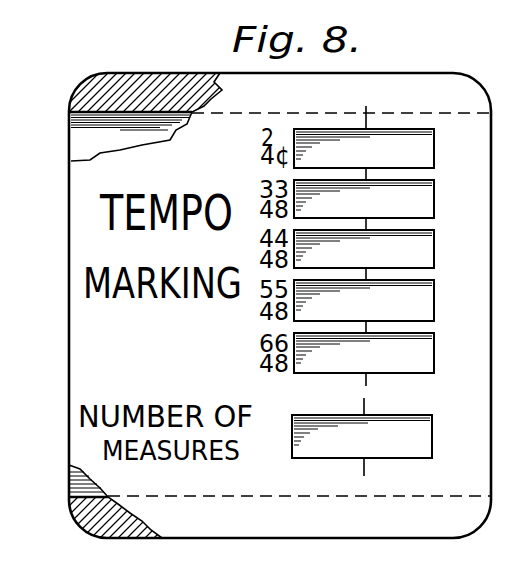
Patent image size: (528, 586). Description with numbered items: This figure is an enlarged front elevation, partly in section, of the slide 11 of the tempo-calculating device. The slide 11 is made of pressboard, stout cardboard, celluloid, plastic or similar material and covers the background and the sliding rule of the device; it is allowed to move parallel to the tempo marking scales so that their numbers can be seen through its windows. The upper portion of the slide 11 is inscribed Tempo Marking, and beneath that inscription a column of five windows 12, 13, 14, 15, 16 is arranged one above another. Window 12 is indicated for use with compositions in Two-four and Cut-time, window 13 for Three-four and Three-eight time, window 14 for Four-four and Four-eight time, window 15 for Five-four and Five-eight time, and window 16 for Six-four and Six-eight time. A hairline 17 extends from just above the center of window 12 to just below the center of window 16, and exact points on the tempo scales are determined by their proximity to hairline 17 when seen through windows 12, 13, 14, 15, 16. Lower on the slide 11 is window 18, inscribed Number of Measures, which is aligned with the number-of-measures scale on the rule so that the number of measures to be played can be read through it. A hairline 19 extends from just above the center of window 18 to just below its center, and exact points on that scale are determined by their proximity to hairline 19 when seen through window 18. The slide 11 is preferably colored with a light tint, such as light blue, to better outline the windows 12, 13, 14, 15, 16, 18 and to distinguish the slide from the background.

The slide 11 is at (88, 171).
The window 12 is at (434, 147).
The window 13 is at (434, 201).
The window 14 is at (434, 261).
The window 15 is at (434, 307).
The window 16 is at (434, 359).
The hairline 17 is at (366, 120).
The window 18 is at (432, 446).
The hairline 19 is at (364, 404).